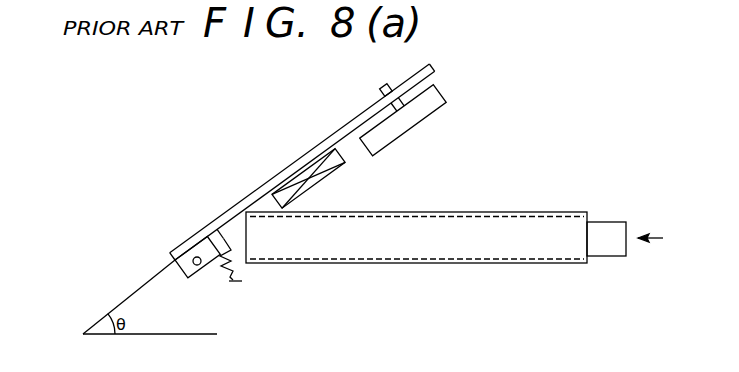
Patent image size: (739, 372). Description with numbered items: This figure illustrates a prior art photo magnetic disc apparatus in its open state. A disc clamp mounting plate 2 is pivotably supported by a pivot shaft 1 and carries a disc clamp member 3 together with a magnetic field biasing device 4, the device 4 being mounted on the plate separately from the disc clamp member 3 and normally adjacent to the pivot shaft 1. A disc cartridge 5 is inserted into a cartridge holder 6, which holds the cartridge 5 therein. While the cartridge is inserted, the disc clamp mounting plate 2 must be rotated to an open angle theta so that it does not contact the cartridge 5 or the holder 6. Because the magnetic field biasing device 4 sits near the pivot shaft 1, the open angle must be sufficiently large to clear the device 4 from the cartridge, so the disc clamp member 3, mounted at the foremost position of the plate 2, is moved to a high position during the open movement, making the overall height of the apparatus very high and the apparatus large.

The pivot shaft 1 is at (199, 265).
The disc clamp mounting plate 2 is at (365, 110).
The disc clamp member 3 is at (410, 122).
The magnetic field biasing device 4 is at (318, 178).
The disc cartridge 5 is at (615, 224).
The cartridge holder 6 is at (507, 222).